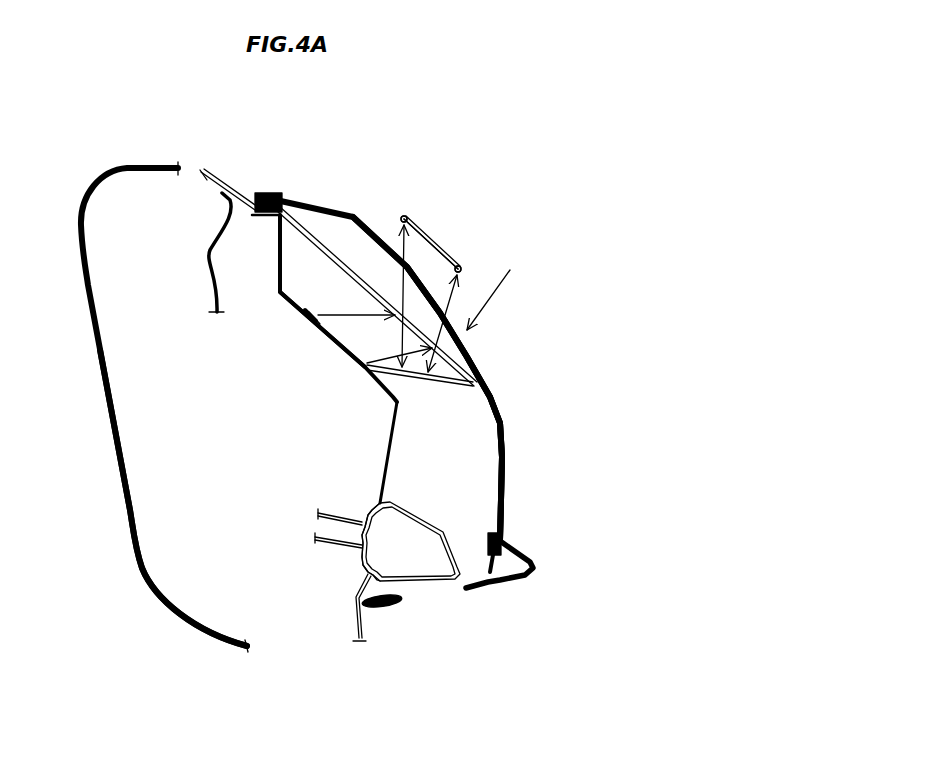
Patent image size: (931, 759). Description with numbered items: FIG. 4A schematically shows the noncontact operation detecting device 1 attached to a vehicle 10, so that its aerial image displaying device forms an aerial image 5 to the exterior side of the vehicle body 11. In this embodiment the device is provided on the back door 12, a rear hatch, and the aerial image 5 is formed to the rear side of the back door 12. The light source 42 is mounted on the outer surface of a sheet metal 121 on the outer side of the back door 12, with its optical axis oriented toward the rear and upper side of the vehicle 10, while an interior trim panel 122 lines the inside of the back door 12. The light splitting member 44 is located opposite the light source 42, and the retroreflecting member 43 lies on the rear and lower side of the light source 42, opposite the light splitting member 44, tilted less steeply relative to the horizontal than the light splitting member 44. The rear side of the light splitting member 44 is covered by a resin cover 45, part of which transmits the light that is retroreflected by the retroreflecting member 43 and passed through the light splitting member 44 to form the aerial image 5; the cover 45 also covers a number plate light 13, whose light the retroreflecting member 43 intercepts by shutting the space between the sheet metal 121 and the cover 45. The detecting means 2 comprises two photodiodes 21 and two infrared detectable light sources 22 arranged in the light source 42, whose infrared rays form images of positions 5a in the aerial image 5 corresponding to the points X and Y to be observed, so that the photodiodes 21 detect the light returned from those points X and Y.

The noncontact operation detecting device 1 is at (518, 290).
The detecting means 2 is at (296, 318).
The aerial image 5 is at (395, 210).
The positions 5a is at (405, 216).
The vehicle 10 is at (100, 147).
The vehicle body 11 is at (297, 185).
The back door 12 is at (380, 640).
The number plate light 13 is at (432, 578).
The photodiodes 21 is at (312, 316).
The detectable light sources 22 is at (310, 315).
The light source 42 is at (334, 340).
The retroreflecting member 43 is at (455, 386).
The light splitting member 44 is at (468, 357).
The cover 45 is at (503, 455).
The sheet metal 121 is at (393, 463).
The interior trim panel 122 is at (130, 533).
The point to be observed X is at (415, 217).
The point to be observed Y is at (473, 262).